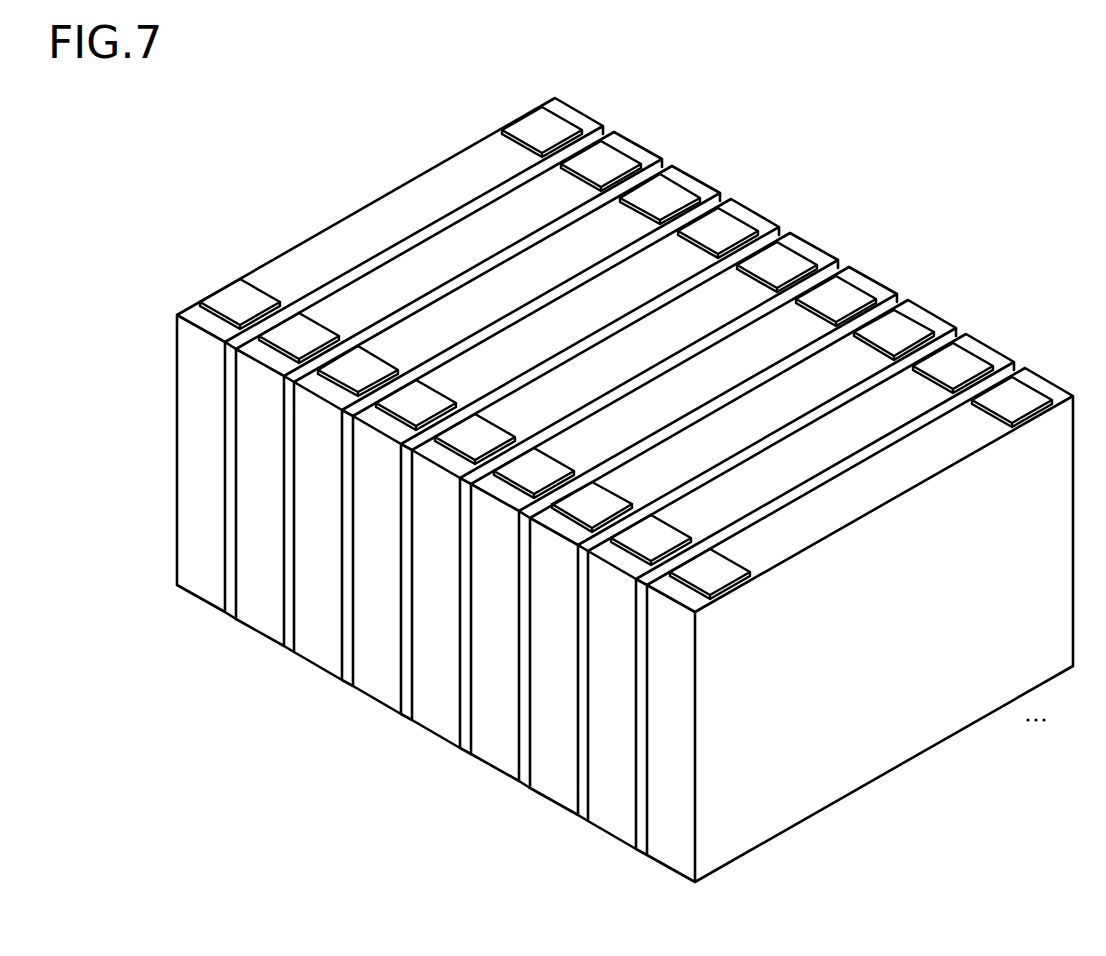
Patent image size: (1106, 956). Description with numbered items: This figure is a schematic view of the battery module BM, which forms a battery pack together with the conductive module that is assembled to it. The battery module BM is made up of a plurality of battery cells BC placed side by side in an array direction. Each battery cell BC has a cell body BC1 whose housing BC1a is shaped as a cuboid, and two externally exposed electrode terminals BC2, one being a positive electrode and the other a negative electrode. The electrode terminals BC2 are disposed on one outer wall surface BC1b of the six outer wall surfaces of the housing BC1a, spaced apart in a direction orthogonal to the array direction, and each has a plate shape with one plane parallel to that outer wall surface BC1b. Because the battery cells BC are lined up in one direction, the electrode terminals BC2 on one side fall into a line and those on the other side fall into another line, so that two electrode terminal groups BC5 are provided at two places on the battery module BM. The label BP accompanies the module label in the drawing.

The cell body BC1 is at (588, 499).
The battery cell BC is at (625, 469).
The housing BC1a is at (625, 493).
The outer wall surface BC1b is at (692, 453).
The electrode terminal BC2 is at (414, 398).
The electrode terminal group BC5 is at (500, 104).
The battery module BM is at (881, 142).
The battery pack BP is at (588, 484).